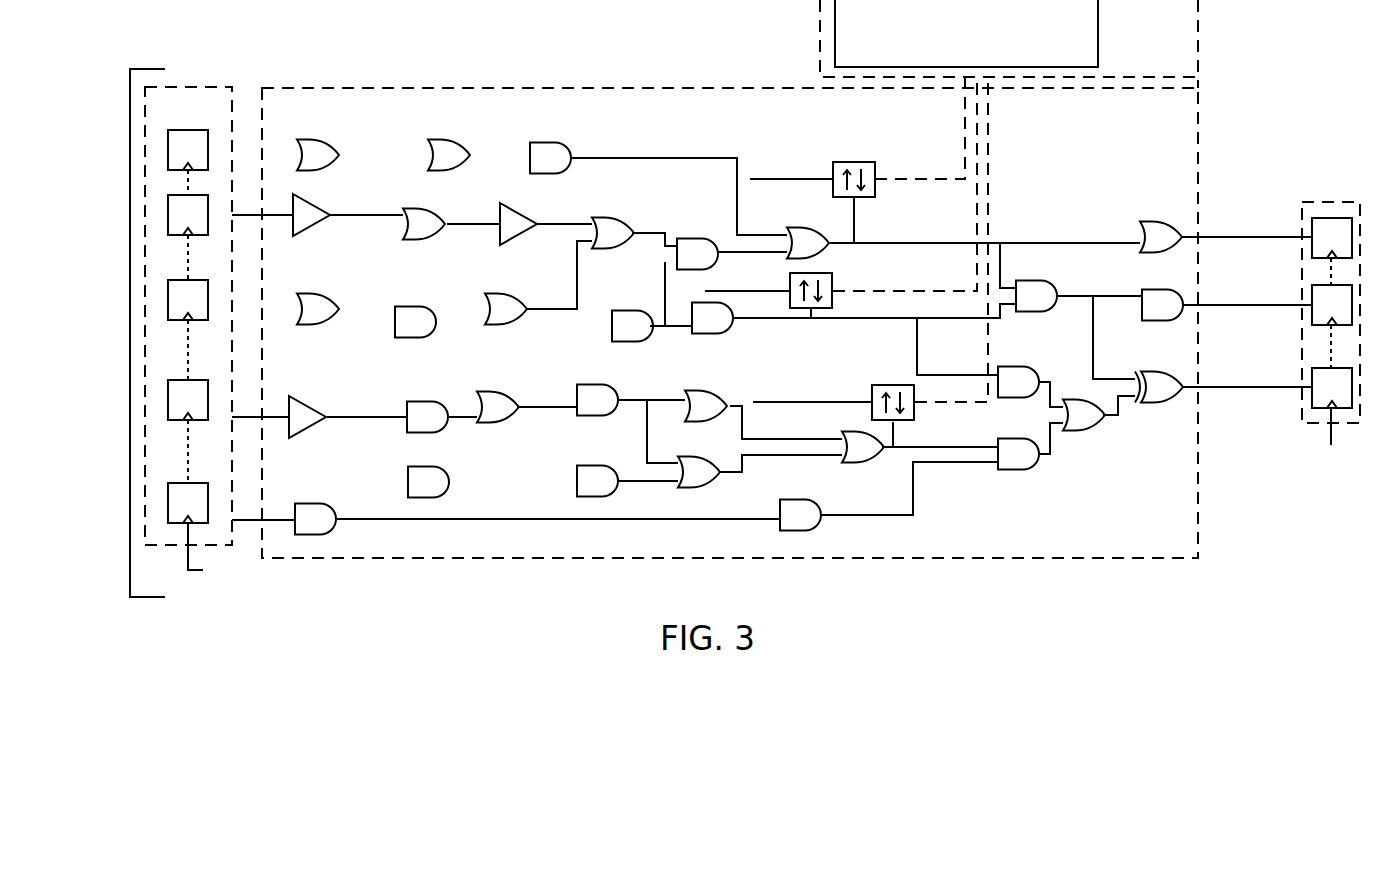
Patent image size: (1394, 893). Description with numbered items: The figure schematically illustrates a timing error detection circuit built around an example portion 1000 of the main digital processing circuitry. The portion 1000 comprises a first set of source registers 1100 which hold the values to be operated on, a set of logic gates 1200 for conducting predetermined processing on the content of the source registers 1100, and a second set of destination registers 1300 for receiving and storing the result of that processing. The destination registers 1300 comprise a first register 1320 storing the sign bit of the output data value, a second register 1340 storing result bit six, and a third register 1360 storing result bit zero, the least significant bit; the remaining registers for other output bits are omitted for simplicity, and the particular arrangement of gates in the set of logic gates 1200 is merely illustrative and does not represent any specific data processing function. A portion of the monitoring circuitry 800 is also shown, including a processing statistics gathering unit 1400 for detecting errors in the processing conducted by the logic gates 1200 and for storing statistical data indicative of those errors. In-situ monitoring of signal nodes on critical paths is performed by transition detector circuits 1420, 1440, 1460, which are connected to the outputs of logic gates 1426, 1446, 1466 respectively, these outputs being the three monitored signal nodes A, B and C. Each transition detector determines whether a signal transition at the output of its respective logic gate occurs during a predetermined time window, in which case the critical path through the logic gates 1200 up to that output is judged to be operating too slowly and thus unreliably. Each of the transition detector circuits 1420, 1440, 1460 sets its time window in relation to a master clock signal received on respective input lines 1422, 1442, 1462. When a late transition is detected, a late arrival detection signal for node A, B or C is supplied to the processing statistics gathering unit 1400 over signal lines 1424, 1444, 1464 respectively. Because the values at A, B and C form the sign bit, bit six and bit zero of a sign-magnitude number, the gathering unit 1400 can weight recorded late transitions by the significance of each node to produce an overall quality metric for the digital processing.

The monitoring circuitry 800 is at (1199, 53).
The portion of the main digital processing circuitry 1000 is at (131, 266).
The first set of source registers 1100 is at (230, 66).
The set of logic gates 1200 is at (473, 68).
The second set of destination registers 1300 is at (1335, 182).
The first register 1320 is at (1312, 228).
The second register 1340 is at (1309, 318).
The third register 1360 is at (1309, 400).
The processing statistics gathering unit 1400 is at (1100, 46).
The transition detector circuit 1420 is at (856, 162).
The input line 1422 is at (757, 179).
The signal line 1424 is at (940, 180).
The logic gate 1426 is at (785, 241).
The transition detector circuit 1440 is at (793, 310).
The input line 1442 is at (763, 292).
The signal line 1444 is at (947, 292).
The logic gate 1446 is at (690, 332).
The transition detector circuit 1460 is at (906, 422).
The input line 1462 is at (875, 369).
The signal line 1464 is at (990, 330).
The logic gate 1466 is at (857, 461).